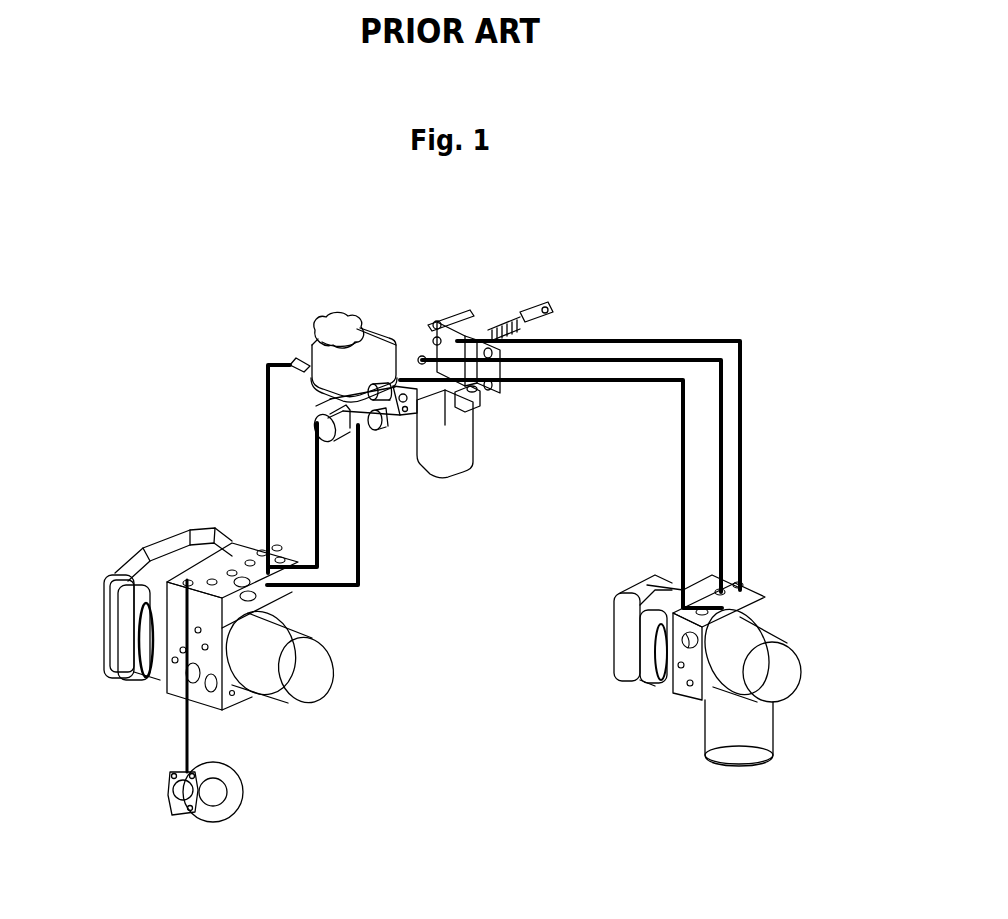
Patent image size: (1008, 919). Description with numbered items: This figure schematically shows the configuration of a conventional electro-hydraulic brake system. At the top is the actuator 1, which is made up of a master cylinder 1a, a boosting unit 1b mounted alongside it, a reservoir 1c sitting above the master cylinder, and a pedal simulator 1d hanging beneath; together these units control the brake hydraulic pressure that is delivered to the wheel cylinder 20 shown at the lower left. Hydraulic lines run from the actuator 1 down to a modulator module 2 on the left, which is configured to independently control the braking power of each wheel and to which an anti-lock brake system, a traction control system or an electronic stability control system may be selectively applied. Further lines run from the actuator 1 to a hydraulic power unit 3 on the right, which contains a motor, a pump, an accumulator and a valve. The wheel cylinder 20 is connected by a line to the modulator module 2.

The actuator 1 is at (463, 289).
The master cylinder 1a is at (395, 418).
The boosting unit 1b is at (435, 356).
The reservoir 1c is at (372, 340).
The pedal simulator 1d is at (470, 443).
The modulator module 2 is at (316, 730).
The hydraulic power unit (HPU) 3 is at (805, 600).
The wheel cylinder 20 is at (168, 790).